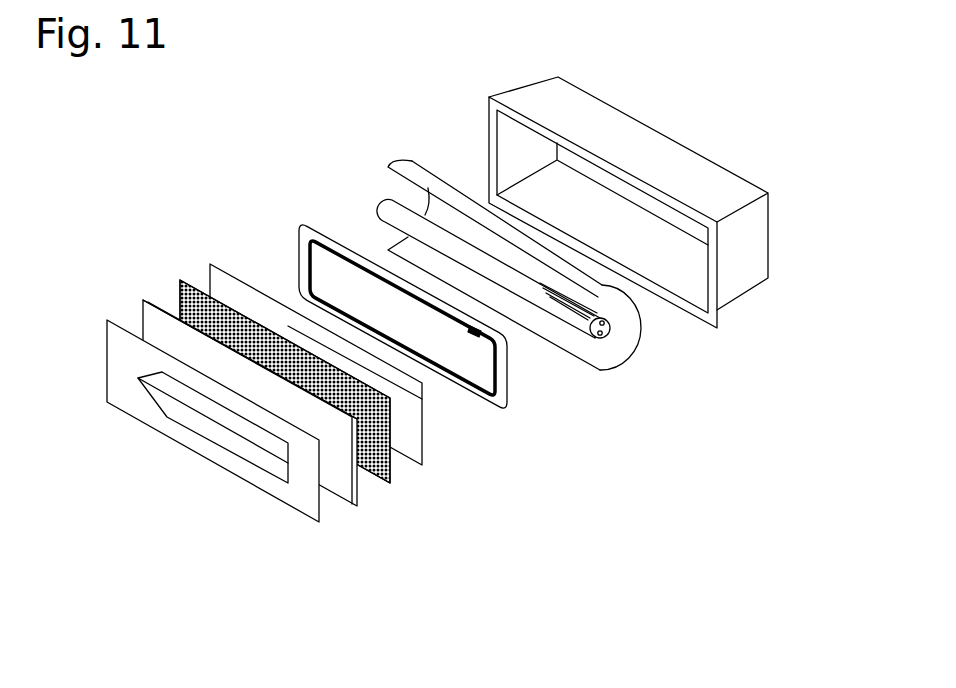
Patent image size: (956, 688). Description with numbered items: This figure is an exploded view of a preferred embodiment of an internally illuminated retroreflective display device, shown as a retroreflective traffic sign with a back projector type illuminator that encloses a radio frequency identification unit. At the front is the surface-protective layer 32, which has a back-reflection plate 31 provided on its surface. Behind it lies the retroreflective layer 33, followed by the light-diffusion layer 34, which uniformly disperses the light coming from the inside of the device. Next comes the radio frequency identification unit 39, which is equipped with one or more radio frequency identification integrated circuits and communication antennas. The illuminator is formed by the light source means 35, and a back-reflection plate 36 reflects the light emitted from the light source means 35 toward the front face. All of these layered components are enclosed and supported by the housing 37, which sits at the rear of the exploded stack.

The back-reflection plate 31 is at (310, 511).
The surface-protective layer 32 is at (348, 497).
The retroreflective layer 33 is at (387, 475).
The light-diffusion layer 34 is at (417, 455).
The light source means 35 is at (577, 322).
The back-reflection plate 36 is at (628, 313).
The housing 37 is at (735, 285).
The radio frequency identification unit 39 is at (503, 407).